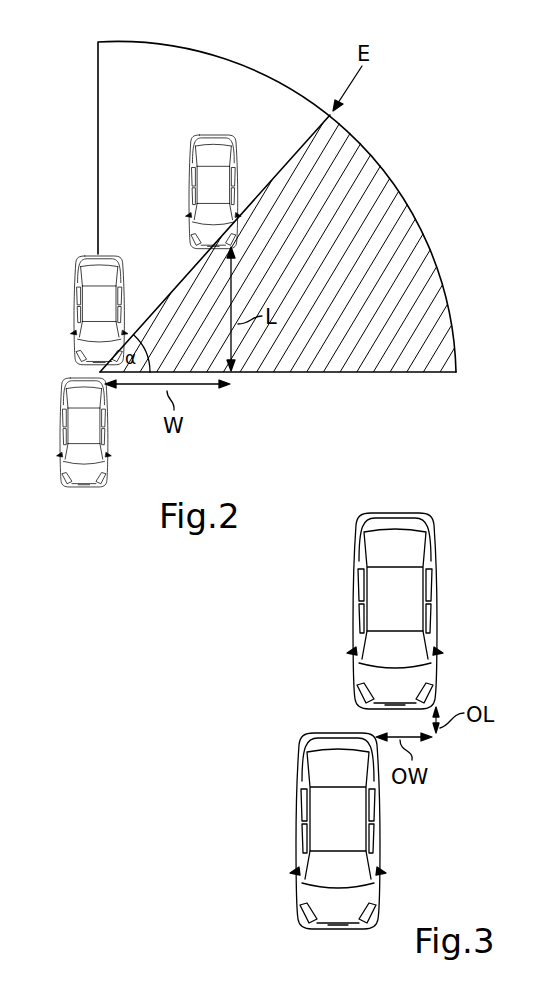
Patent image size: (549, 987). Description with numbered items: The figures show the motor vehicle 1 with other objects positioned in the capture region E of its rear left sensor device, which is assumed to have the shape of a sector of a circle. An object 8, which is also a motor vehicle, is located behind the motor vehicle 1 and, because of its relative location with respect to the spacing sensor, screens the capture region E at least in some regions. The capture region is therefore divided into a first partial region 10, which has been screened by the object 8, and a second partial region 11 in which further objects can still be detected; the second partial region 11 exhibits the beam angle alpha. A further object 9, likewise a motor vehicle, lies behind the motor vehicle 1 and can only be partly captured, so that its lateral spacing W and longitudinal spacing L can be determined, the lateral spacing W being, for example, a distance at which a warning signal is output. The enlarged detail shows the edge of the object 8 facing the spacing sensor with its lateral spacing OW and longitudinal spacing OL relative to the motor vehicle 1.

In FIG. 2, the motor vehicle 1 is at (60, 432).
In FIG. 3, the motor vehicle 1 is at (382, 846).
In FIG. 2, the object 8 is at (74, 308).
In FIG. 3, the object 8 is at (438, 613).
In FIG. 2, the further object 9 is at (189, 188).
In FIG. 2, the first partial region 10 is at (214, 73).
In FIG. 2, the second partial region 11 is at (412, 236).